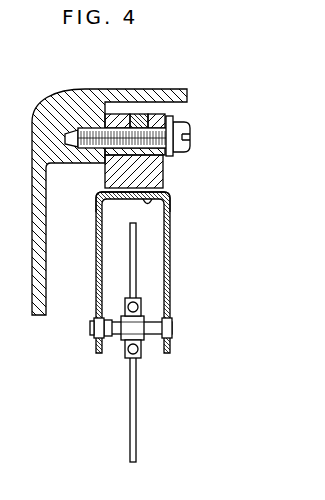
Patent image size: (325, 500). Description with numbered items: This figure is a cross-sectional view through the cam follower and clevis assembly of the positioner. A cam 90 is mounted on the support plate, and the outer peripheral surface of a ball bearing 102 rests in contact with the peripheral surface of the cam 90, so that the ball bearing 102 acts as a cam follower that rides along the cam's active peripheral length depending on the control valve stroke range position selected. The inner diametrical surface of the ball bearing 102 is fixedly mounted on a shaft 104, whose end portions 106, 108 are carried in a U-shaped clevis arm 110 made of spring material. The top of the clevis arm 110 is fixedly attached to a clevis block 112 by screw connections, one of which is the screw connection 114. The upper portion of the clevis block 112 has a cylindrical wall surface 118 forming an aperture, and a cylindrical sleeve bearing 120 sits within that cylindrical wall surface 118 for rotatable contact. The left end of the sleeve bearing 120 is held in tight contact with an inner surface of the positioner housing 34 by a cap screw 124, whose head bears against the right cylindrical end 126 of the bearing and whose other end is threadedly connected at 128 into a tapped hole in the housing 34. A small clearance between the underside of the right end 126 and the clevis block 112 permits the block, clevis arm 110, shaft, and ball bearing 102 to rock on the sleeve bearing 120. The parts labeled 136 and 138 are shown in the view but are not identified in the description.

The positioner housing 34 is at (222, 304).
The cam 90 is at (136, 418).
The ball bearing 102 is at (143, 302).
The shaft 104 is at (124, 341).
The end portion of shaft 106 is at (92, 328).
The end portion of shaft 108 is at (174, 329).
The clevis arm 110 is at (170, 248).
The clevis block 112 is at (155, 173).
The screw connection 114 is at (167, 214).
The cylindrical wall surface 118 is at (113, 114).
The cylindrical sleeve bearing 120 is at (134, 114).
The cap screw 124 is at (191, 147).
The right cylindrical end of bearing 126 is at (173, 118).
The threaded connection 128 is at (78, 117).
The spacer sleeve 136 is at (109, 318).
The bearing hub 138 is at (146, 341).